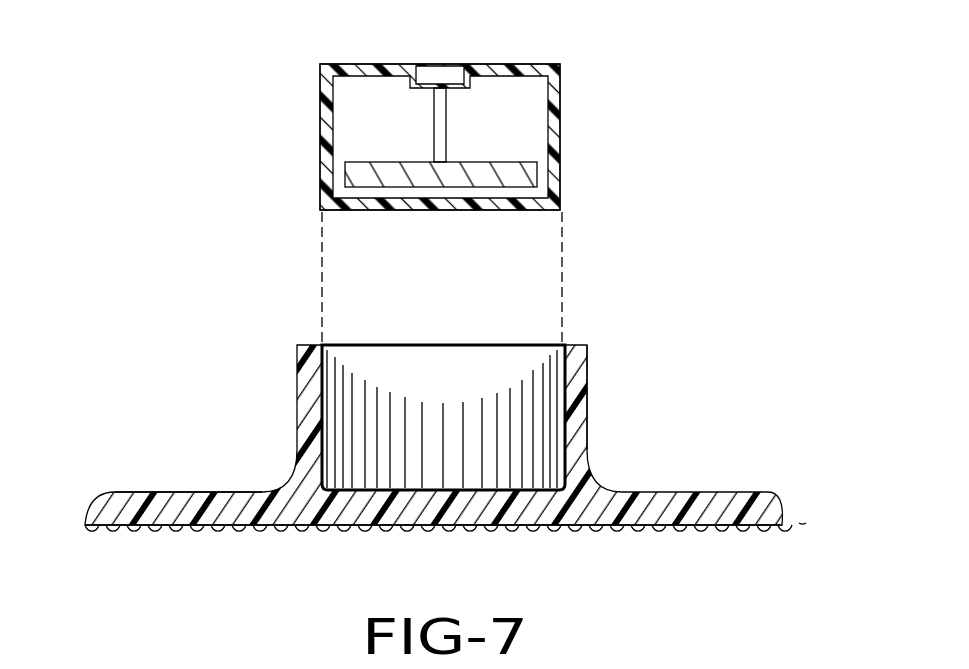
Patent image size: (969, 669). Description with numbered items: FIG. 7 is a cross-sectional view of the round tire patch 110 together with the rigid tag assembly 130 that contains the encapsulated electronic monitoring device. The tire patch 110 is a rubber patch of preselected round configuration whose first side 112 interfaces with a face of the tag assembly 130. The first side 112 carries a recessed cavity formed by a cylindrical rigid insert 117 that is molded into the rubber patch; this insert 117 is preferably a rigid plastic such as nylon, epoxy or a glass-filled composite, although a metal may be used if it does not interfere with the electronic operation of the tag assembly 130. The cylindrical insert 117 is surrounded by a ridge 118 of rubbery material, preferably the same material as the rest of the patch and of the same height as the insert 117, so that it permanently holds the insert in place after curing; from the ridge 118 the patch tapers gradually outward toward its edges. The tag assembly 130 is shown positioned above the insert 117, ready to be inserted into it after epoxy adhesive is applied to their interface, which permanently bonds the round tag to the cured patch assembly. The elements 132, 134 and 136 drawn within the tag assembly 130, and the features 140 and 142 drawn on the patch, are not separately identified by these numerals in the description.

The tire patch 110 is at (148, 492).
The first side 112 is at (183, 492).
The cylindrical rigid insert 117 is at (440, 380).
The ridge 118 is at (585, 405).
The rigid tag assembly 130 is at (318, 113).
The stem 132 is at (370, 170).
The plate 134 is at (517, 175).
The housing shell 136 is at (510, 68).
The flange layer 140 is at (208, 492).
The bottom textured surface 142 is at (493, 530).